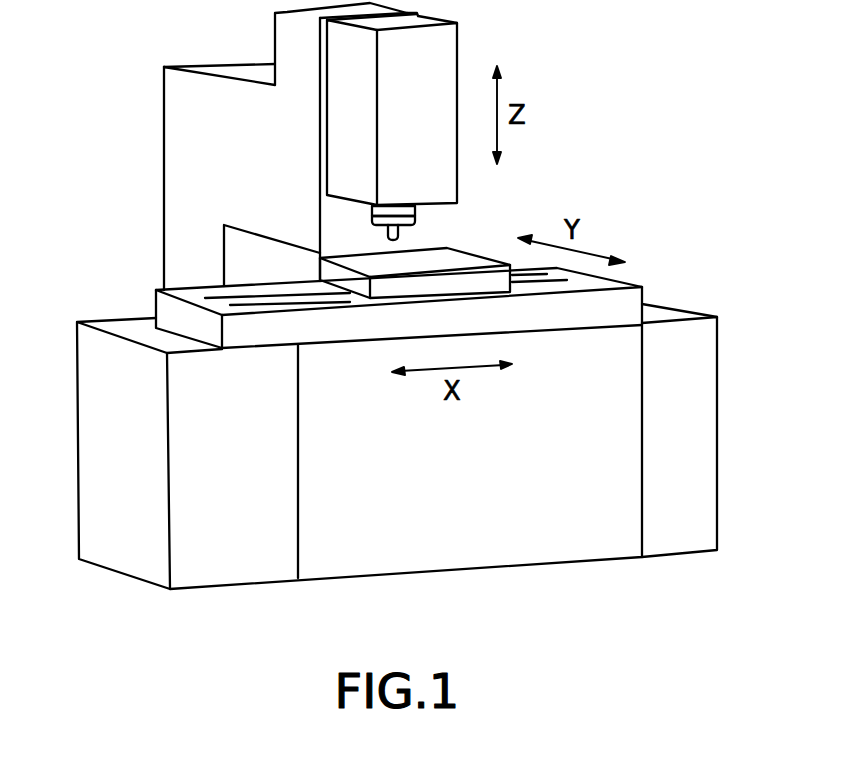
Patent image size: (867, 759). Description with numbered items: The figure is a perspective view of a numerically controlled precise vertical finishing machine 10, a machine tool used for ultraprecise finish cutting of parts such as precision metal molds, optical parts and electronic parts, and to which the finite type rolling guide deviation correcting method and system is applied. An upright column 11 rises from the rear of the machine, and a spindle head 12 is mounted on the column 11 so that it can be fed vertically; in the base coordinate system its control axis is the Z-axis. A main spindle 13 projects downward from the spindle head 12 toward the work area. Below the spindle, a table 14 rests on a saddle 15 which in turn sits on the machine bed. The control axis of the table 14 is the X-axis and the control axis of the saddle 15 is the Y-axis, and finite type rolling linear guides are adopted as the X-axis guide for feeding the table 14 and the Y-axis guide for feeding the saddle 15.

The numerically controlled precise vertical finishing machine 10 is at (640, 90).
The column 11 is at (172, 162).
The spindle head 12 is at (448, 57).
The main spindle 13 is at (415, 215).
The table 14 is at (470, 282).
The saddle 15 is at (628, 308).